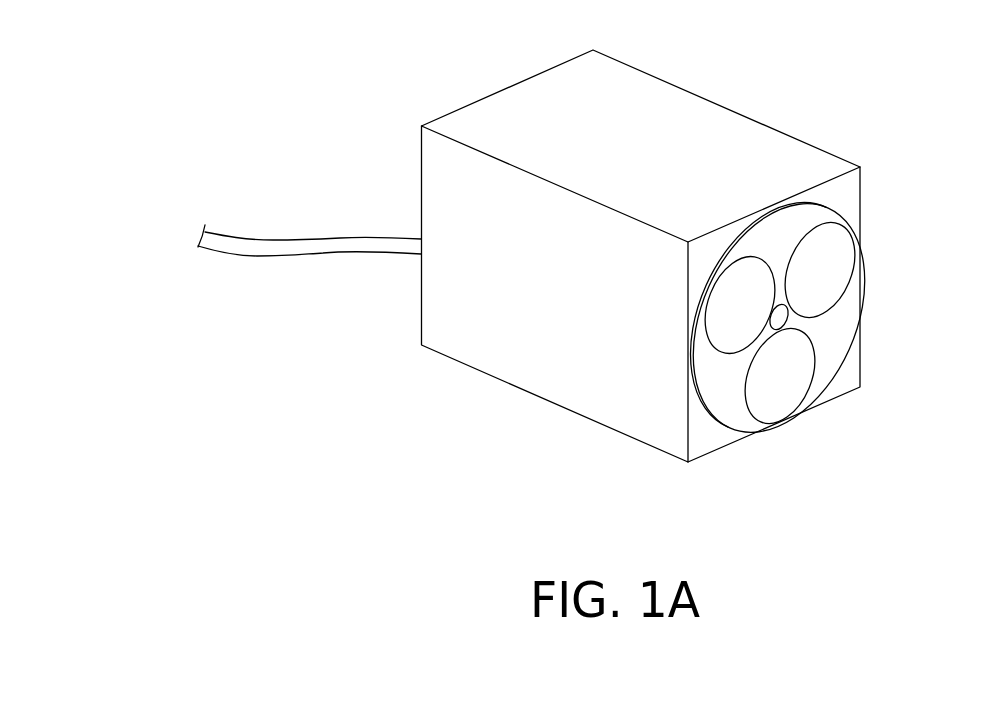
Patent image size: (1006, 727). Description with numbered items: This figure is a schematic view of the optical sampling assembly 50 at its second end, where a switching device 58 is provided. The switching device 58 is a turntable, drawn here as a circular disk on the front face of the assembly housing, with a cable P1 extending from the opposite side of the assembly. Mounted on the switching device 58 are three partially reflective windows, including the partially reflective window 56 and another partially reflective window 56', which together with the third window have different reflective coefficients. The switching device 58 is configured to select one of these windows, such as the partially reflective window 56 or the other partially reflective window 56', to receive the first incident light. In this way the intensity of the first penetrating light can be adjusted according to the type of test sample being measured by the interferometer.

The optical sampling assembly 50 is at (710, 127).
The cable P1 is at (311, 247).
The switching device 58 is at (829, 348).
The partially reflective window 56 is at (803, 384).
The partially reflective window 56' is at (814, 307).